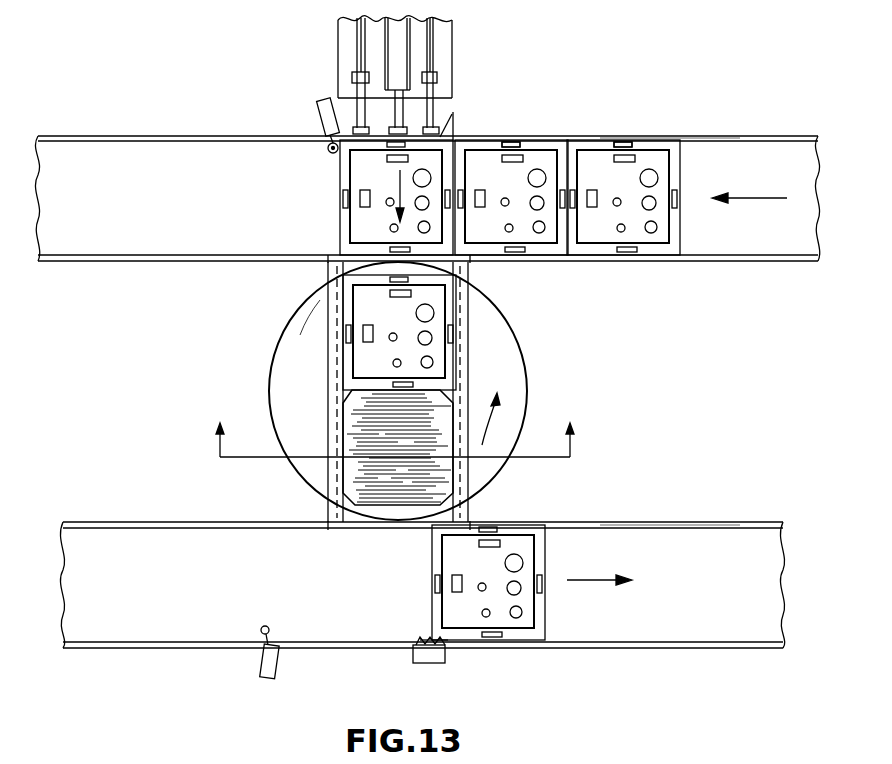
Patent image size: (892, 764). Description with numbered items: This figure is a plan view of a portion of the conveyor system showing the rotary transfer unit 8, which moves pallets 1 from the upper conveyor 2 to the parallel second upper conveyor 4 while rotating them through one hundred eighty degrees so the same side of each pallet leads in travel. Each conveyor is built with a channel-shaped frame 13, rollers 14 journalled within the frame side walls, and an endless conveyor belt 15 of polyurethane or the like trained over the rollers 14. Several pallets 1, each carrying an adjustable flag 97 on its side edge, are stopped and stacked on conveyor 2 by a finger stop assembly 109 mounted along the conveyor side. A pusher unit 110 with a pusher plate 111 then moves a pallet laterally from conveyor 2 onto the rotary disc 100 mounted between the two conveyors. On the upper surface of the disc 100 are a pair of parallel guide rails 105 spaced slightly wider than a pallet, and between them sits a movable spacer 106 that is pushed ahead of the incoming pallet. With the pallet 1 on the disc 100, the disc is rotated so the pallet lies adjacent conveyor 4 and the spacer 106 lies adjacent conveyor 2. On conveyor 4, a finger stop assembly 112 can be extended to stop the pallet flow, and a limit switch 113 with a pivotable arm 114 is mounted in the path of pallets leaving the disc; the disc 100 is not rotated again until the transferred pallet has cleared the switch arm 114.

The pallet 1 is at (358, 176).
The upper conveyor 2 is at (178, 131).
The second upper conveyor 4 is at (145, 519).
The rotary transfer unit 8 is at (514, 330).
The channel-shaped frame 13 is at (768, 134).
The rollers 14 is at (397, 427).
The endless conveyor belt 15 is at (804, 176).
The adjustable flag 97 is at (506, 142).
The rotary disc 100 is at (296, 331).
The guide rails 105 is at (328, 369).
The movable spacer 106 is at (365, 428).
The finger stop assembly 109 is at (318, 122).
The pusher unit 110 is at (455, 69).
The pusher plate 111 is at (443, 124).
The finger stop assembly 112 is at (262, 665).
The limit switch 113 is at (440, 662).
The pivotable arm 114 is at (447, 640).